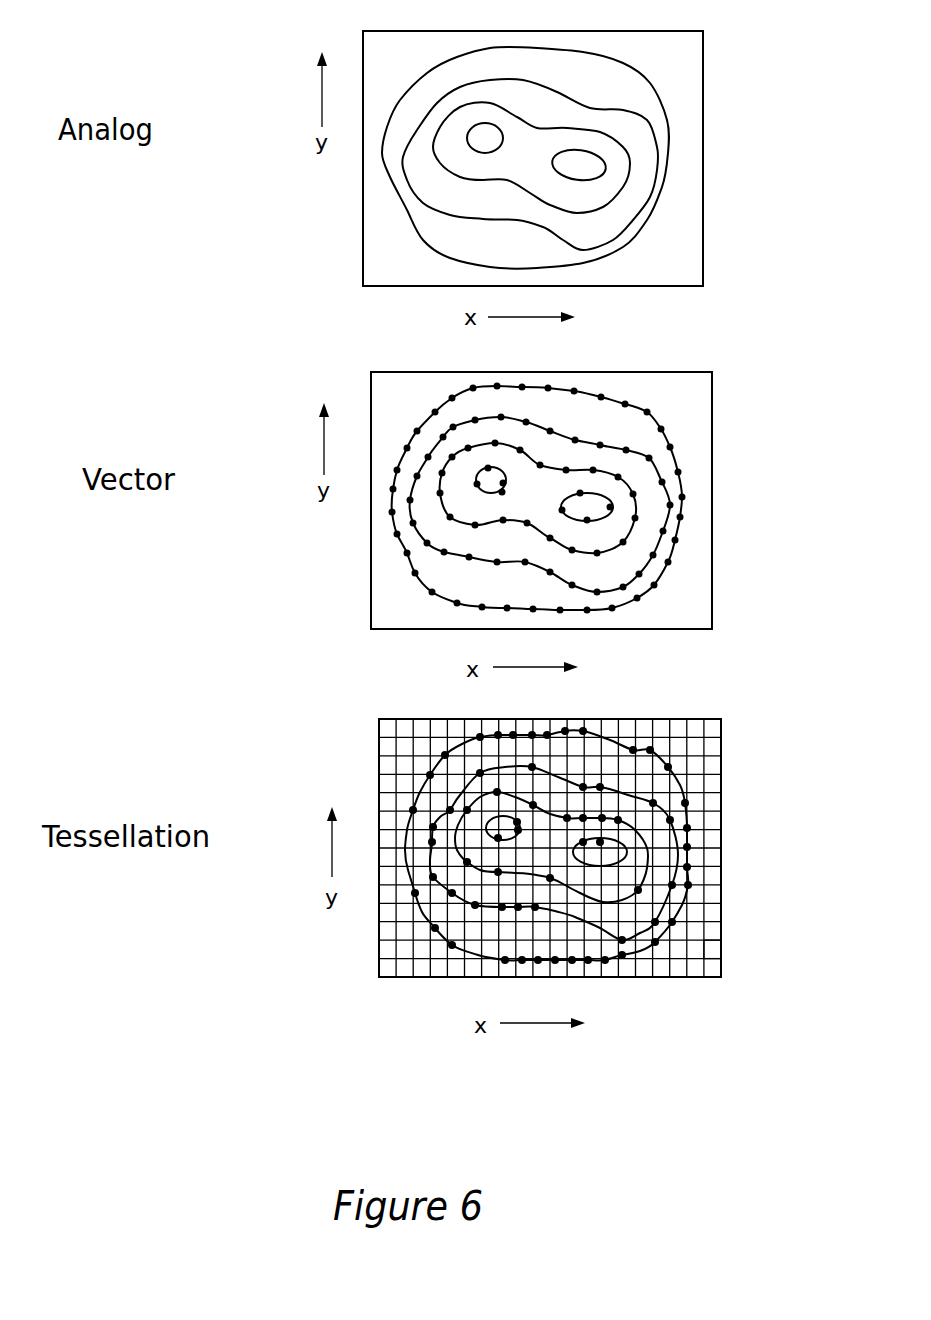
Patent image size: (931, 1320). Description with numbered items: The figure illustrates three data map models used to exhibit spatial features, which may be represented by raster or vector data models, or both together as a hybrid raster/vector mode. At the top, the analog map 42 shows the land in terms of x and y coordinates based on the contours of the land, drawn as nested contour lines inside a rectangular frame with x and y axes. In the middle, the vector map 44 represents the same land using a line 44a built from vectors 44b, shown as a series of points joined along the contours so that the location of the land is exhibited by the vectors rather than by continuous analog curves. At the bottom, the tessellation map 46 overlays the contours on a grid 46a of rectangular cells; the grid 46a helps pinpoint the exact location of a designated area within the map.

The analog map 42 is at (403, 220).
The vector map 44 is at (538, 484).
The line 44a is at (637, 405).
The vectors 44b is at (680, 520).
The tessellation map 46 is at (549, 848).
The grid 46a is at (712, 940).